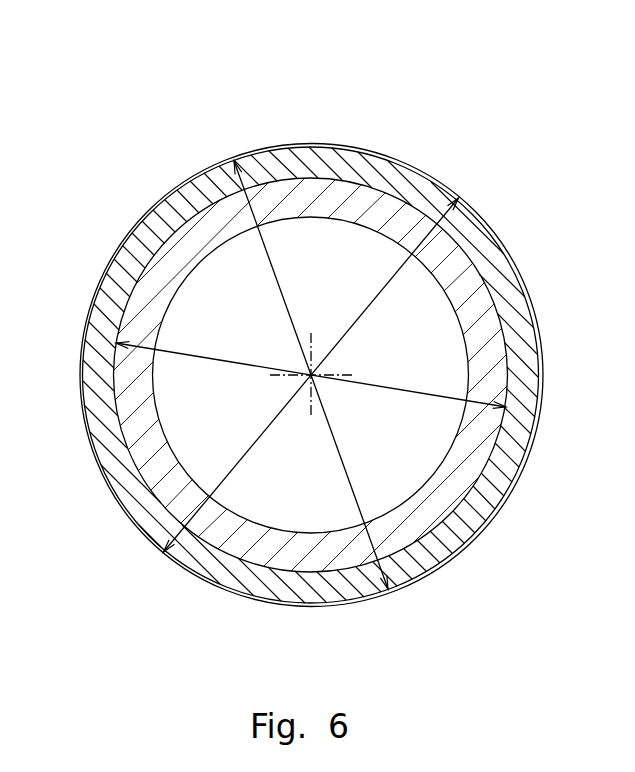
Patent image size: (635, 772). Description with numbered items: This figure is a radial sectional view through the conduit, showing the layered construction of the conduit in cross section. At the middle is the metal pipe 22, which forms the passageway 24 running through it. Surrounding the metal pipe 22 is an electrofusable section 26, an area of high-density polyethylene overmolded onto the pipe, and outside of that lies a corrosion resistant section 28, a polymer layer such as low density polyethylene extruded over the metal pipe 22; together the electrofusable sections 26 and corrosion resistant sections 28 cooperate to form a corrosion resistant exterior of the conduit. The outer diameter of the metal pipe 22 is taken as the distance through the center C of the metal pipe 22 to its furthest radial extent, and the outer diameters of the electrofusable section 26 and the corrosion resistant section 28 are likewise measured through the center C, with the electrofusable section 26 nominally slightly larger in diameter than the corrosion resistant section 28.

The metal pipe 22 is at (340, 193).
The passageway 24 is at (292, 490).
The electrofusable section 26 is at (282, 146).
The corrosion resistant section 28 is at (503, 270).
The center C is at (313, 378).